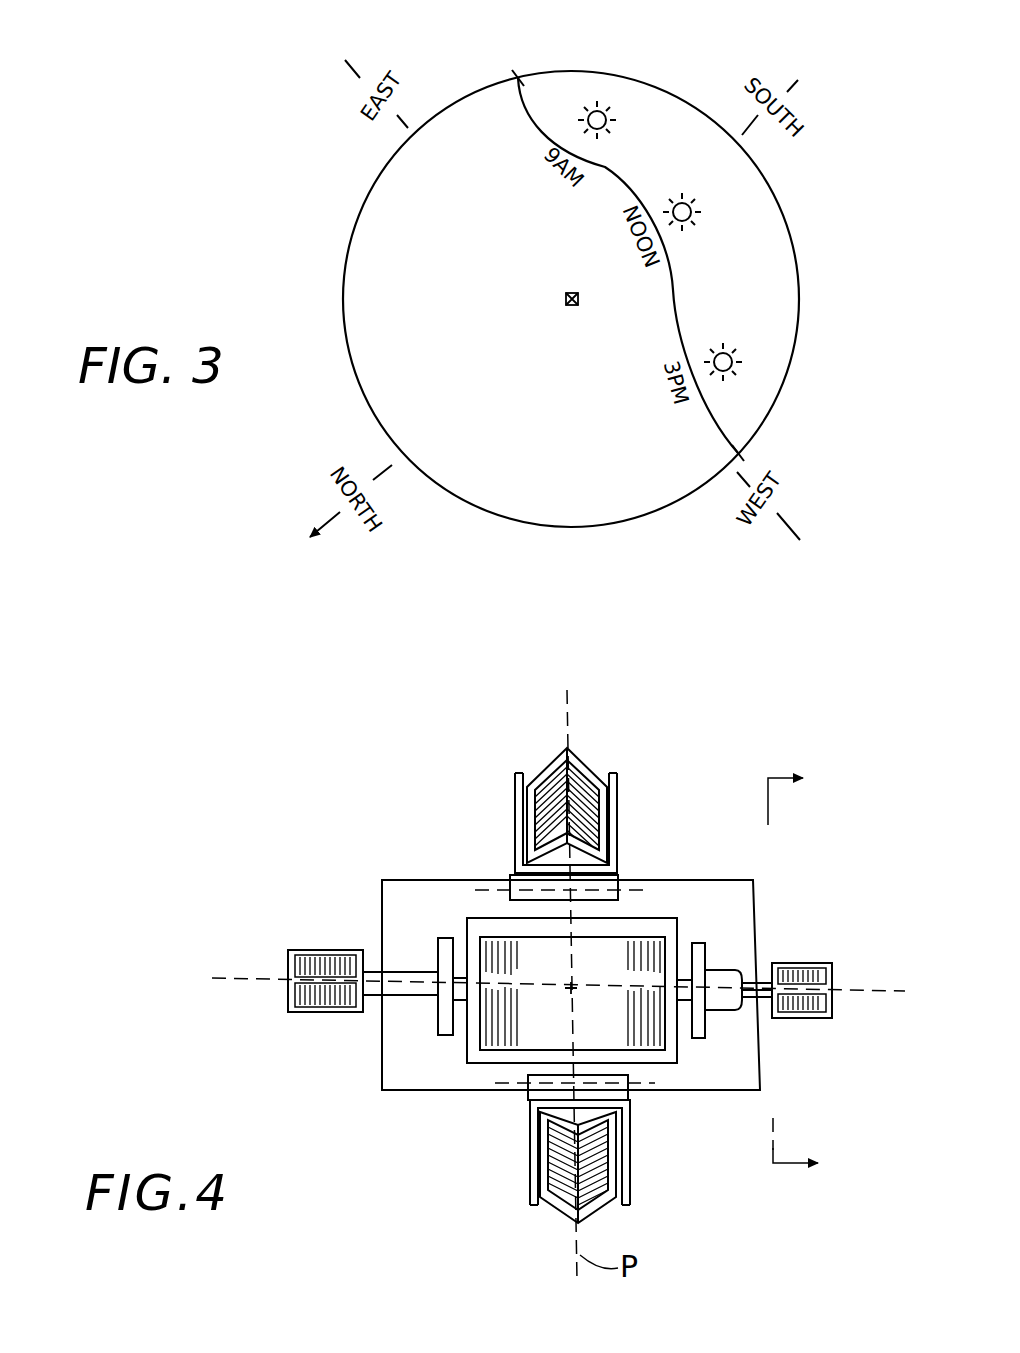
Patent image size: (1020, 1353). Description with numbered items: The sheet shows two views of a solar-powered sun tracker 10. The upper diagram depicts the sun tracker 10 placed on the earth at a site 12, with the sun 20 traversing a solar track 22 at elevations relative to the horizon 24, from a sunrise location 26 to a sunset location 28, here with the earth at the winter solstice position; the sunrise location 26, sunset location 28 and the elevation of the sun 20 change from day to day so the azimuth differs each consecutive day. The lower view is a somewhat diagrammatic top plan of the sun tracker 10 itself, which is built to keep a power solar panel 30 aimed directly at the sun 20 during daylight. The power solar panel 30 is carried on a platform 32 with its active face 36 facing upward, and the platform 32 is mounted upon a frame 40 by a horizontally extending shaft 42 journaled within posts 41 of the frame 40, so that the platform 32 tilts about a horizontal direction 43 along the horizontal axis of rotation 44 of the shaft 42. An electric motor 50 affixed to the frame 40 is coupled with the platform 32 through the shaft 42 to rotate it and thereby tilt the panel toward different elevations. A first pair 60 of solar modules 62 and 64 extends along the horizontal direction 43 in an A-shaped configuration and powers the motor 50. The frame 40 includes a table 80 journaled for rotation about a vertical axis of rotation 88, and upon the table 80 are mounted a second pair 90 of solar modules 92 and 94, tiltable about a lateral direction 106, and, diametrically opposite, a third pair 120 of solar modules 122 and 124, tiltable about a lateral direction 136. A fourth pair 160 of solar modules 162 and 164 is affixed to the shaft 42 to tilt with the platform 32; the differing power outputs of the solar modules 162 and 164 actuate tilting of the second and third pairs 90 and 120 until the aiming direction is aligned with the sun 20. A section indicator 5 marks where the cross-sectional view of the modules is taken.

In FIG. 3, the solar-powered sun tracker 10 is at (562, 292).
In FIG. 4, the solar-powered sun tracker 10 is at (402, 874).
In FIG. 3, the site 12 is at (572, 308).
In FIG. 3, the sun 20 is at (692, 212).
In FIG. 3, the solar track 22 is at (683, 293).
In FIG. 3, the horizon 24 is at (343, 296).
In FIG. 3, the sunrise location 26 is at (518, 78).
In FIG. 3, the sunset location 28 is at (738, 453).
In FIG. 4, the power solar panel 30 is at (650, 916).
In FIG. 4, the platform 32 is at (670, 930).
In FIG. 4, the active face 36 is at (610, 1029).
In FIG. 4, the frame 40 is at (420, 1078).
In FIG. 4, the posts 41 is at (438, 1025).
In FIG. 4, the shaft 42 is at (372, 1003).
In FIG. 4, the horizontal direction 43 is at (863, 990).
In FIG. 4, the horizontal axis of rotation 44 is at (418, 985).
In FIG. 4, the electric motor 50 is at (722, 985).
In FIG. 4, the first pair of solar modules 60 is at (850, 983).
In FIG. 4, the solar module 62 is at (808, 963).
In FIG. 4, the solar module 64 is at (807, 1018).
In FIG. 4, the table 80 is at (432, 1090).
In FIG. 4, the vertical axis of rotation 88 is at (575, 984).
In FIG. 4, the second pair of solar modules 90 is at (582, 1183).
In FIG. 4, the solar module 92 is at (612, 1178).
In FIG. 4, the solar module 94 is at (555, 1157).
In FIG. 4, the lateral direction 106 is at (540, 1088).
In FIG. 4, the third pair of solar modules 120 is at (579, 783).
In FIG. 4, the solar module 122 is at (590, 800).
In FIG. 4, the solar module 124 is at (530, 800).
In FIG. 4, the lateral direction 136 is at (525, 888).
In FIG. 4, the fourth pair of solar modules 160 is at (284, 989).
In FIG. 4, the solar module 162 is at (300, 950).
In FIG. 4, the solar module 164 is at (290, 1012).
In FIG. 4, the section line 5- 5 is at (806, 969).